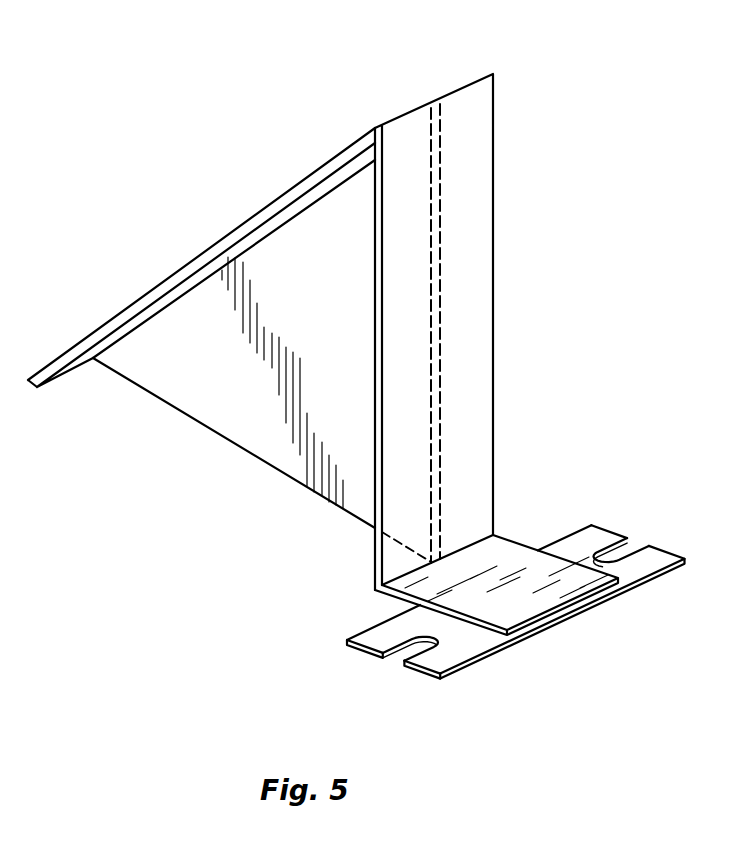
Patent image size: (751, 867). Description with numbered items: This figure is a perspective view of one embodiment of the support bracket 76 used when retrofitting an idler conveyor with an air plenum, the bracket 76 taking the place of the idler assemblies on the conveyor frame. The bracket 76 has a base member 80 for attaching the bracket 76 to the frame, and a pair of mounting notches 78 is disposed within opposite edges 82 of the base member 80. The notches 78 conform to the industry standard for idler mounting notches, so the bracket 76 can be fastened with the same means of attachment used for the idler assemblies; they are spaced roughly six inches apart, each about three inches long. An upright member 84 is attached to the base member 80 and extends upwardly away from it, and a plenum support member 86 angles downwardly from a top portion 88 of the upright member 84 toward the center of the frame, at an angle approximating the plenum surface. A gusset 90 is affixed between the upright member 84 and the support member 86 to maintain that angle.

The bracket 76 is at (384, 385).
The mounting notch 78 is at (655, 544).
The base member 80 is at (510, 540).
The opposite edges 82 is at (682, 557).
The upright member 84 is at (463, 278).
The plenum support member 86 is at (242, 227).
The top portion 88 is at (412, 133).
The gusset 90 is at (252, 407).